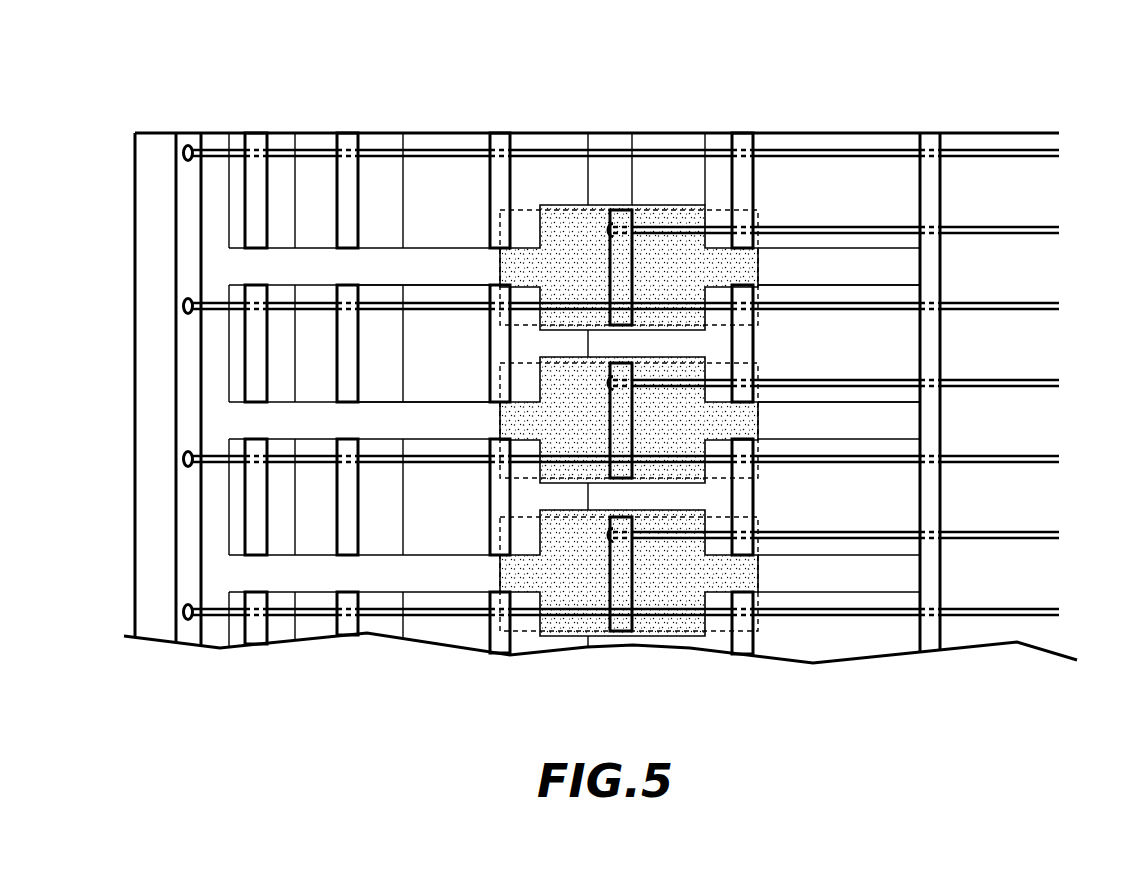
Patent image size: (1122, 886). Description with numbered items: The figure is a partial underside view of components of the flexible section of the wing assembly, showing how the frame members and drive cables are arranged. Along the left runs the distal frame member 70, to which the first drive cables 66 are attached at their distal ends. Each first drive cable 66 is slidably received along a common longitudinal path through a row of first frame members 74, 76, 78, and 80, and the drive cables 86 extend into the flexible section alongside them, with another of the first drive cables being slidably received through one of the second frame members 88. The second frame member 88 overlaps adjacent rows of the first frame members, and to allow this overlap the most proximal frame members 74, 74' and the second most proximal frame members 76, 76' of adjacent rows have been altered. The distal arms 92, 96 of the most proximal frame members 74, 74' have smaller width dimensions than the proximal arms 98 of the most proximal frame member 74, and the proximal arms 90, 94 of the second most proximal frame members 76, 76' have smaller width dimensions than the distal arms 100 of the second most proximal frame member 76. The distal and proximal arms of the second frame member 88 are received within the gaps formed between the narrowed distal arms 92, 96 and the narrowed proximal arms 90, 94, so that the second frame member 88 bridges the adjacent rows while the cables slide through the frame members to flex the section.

The distal frame member 70 is at (190, 192).
The first frame member 80 is at (277, 168).
The first frame member 78 is at (372, 168).
The second most proximal frame member 76 is at (487, 367).
The second most proximal frame member 76' is at (424, 493).
The most proximal frame member 74 is at (782, 367).
The most proximal frame member 74' is at (839, 493).
The distal arm 100 is at (440, 170).
The proximal arm 94 is at (546, 175).
The distal arm 96 is at (676, 182).
The proximal arm 98 is at (853, 190).
The second frame member 88 is at (573, 228).
The proximal arm 90 is at (577, 345).
The distal arm 92 is at (653, 345).
The first drive cable 66 is at (866, 153).
The drive cable 86 is at (1018, 227).